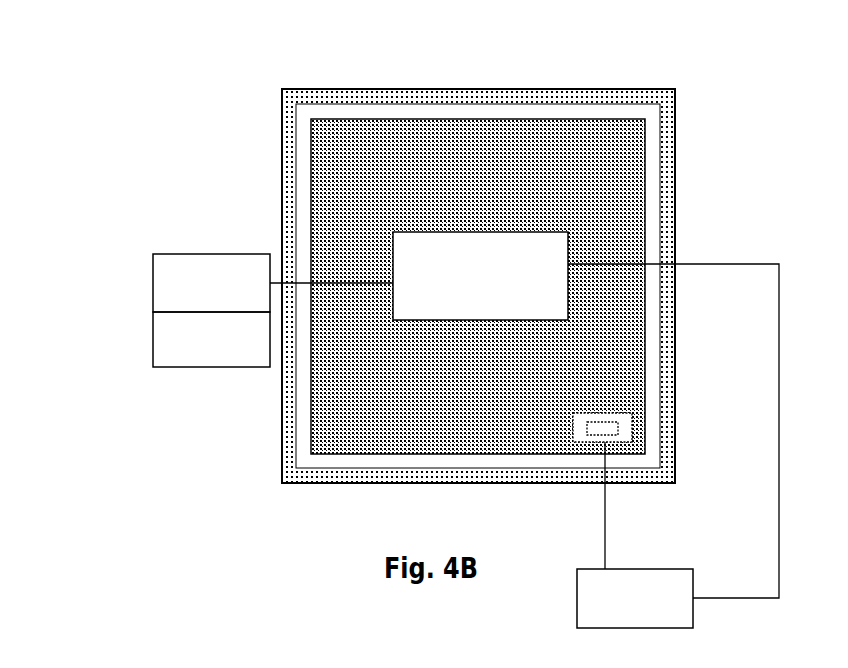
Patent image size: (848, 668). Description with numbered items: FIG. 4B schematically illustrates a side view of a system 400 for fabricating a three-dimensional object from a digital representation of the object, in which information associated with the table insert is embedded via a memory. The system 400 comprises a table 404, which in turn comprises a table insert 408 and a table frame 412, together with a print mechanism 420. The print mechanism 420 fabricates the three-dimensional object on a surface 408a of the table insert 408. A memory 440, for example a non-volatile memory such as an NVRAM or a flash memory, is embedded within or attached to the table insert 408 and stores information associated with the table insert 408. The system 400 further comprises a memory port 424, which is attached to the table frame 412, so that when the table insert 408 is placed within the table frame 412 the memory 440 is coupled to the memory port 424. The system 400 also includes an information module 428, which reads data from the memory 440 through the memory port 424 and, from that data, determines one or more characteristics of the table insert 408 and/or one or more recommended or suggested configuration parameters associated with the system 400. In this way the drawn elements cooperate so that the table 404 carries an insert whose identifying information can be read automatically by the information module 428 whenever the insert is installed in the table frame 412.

The system 400 is at (675, 45).
The table 404 is at (89, 483).
The table insert 408 is at (311, 385).
The surface of the table insert 408a is at (368, 450).
The table frame 412 is at (283, 482).
The print mechanism 420 is at (480, 276).
The memory port 424 is at (587, 498).
The information module 428 is at (466, 441).
The memory 440 is at (623, 415).